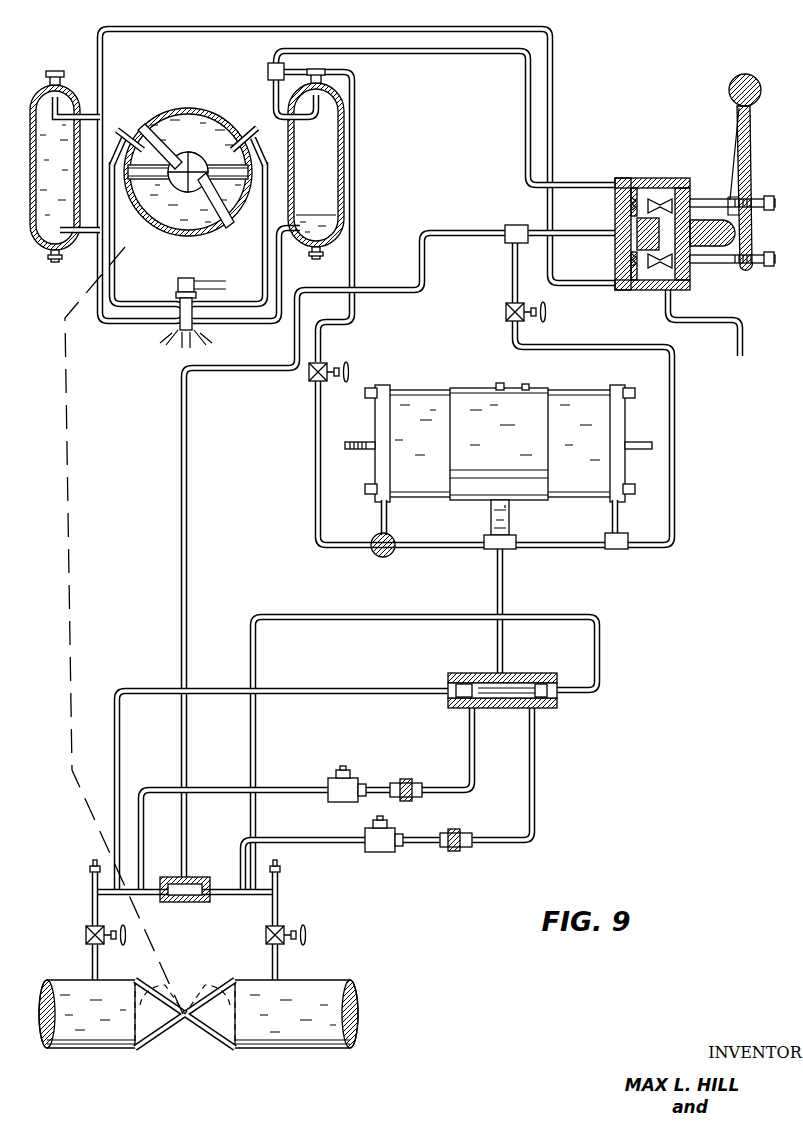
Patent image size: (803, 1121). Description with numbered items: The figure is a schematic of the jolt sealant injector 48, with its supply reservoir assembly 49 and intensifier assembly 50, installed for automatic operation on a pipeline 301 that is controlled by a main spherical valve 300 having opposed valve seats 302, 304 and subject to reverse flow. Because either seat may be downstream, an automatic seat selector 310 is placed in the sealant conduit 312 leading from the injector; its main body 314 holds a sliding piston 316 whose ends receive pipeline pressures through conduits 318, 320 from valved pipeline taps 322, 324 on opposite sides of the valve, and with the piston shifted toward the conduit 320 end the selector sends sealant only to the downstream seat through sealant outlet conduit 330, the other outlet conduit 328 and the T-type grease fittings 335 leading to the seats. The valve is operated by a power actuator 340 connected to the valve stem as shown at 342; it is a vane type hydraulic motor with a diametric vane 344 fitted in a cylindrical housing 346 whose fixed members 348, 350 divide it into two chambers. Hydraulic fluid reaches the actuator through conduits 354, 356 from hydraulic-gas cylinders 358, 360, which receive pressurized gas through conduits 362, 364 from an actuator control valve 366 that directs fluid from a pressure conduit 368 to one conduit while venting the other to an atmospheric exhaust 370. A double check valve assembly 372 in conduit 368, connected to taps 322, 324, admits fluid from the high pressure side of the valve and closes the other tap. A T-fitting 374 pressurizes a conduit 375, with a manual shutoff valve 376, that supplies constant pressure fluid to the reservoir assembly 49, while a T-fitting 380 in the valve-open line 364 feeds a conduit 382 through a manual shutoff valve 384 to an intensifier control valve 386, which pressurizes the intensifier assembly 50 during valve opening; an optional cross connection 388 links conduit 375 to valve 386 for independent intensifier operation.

The conduit 362 is at (481, 27).
The conduit 364 is at (468, 57).
The power actuator 340 is at (222, 203).
The T-fitting 380 is at (268, 73).
The hydraulic-gas cylinder 358 is at (83, 135).
The hydraulic-gas cylinder 360 is at (343, 138).
The fixed member 350 is at (248, 169).
The conduit 382 is at (356, 206).
The pressure conduit 368 is at (473, 230).
The actuator control valve 366 is at (682, 178).
The fixed member 348 is at (160, 201).
The cylindrical housing 346 is at (191, 237).
The diametric vane 344 is at (216, 219).
The conduit 354 is at (116, 289).
The conduit 356 is at (263, 283).
The T-fitting 374 is at (510, 244).
The manual shutoff valve 376 is at (505, 312).
The conduit 375 is at (581, 352).
The atmospheric exhaust 370 is at (742, 341).
The manual shutoff valve 384 is at (307, 369).
The intensifier assembly 50 is at (384, 382).
The supply reservoir assembly 49 is at (612, 384).
The jolt sealant injector 48 is at (533, 445).
The valve stem connection 342 is at (70, 455).
The intensifier control valve 386 is at (393, 556).
The cross connection 388 is at (460, 549).
The sealant conduit 312 is at (504, 598).
The conduit 320 is at (600, 640).
The conduit 318 is at (388, 688).
The main body 314 is at (518, 673).
The sliding piston 316 is at (549, 678).
The automatic seat selector 310 is at (532, 675).
The sealant outlet conduit 328 is at (470, 733).
The sealant outlet conduit 330 is at (536, 748).
The T-type grease fitting 335 is at (350, 778).
The double check valve assembly 372 is at (200, 877).
The valved pipeline tap 322 is at (90, 899).
The valved pipeline tap 324 is at (282, 909).
The pipeline 301 is at (330, 980).
The valve seat 302 is at (167, 970).
The valve seat 304 is at (215, 1000).
The main spherical valve 300 is at (210, 1027).